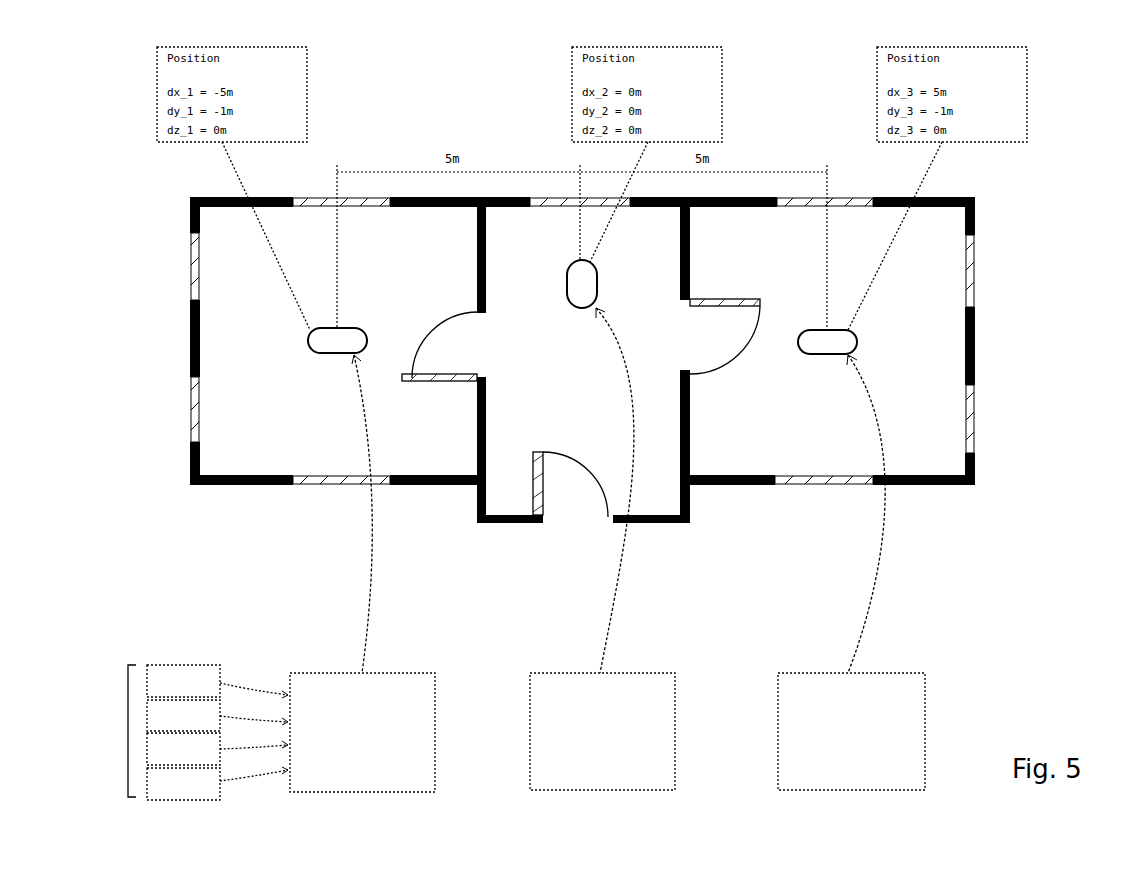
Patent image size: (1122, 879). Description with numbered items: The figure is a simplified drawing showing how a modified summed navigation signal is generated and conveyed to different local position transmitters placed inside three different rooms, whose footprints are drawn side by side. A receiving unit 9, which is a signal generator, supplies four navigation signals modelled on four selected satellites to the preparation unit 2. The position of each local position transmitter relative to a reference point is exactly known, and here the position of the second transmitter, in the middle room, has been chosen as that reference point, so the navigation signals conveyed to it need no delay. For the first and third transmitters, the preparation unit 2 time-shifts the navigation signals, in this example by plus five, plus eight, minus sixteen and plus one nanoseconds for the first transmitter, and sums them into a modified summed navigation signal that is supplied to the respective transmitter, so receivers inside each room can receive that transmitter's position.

The preparation unit 2 is at (392, 673).
The receiving unit 9 is at (128, 733).